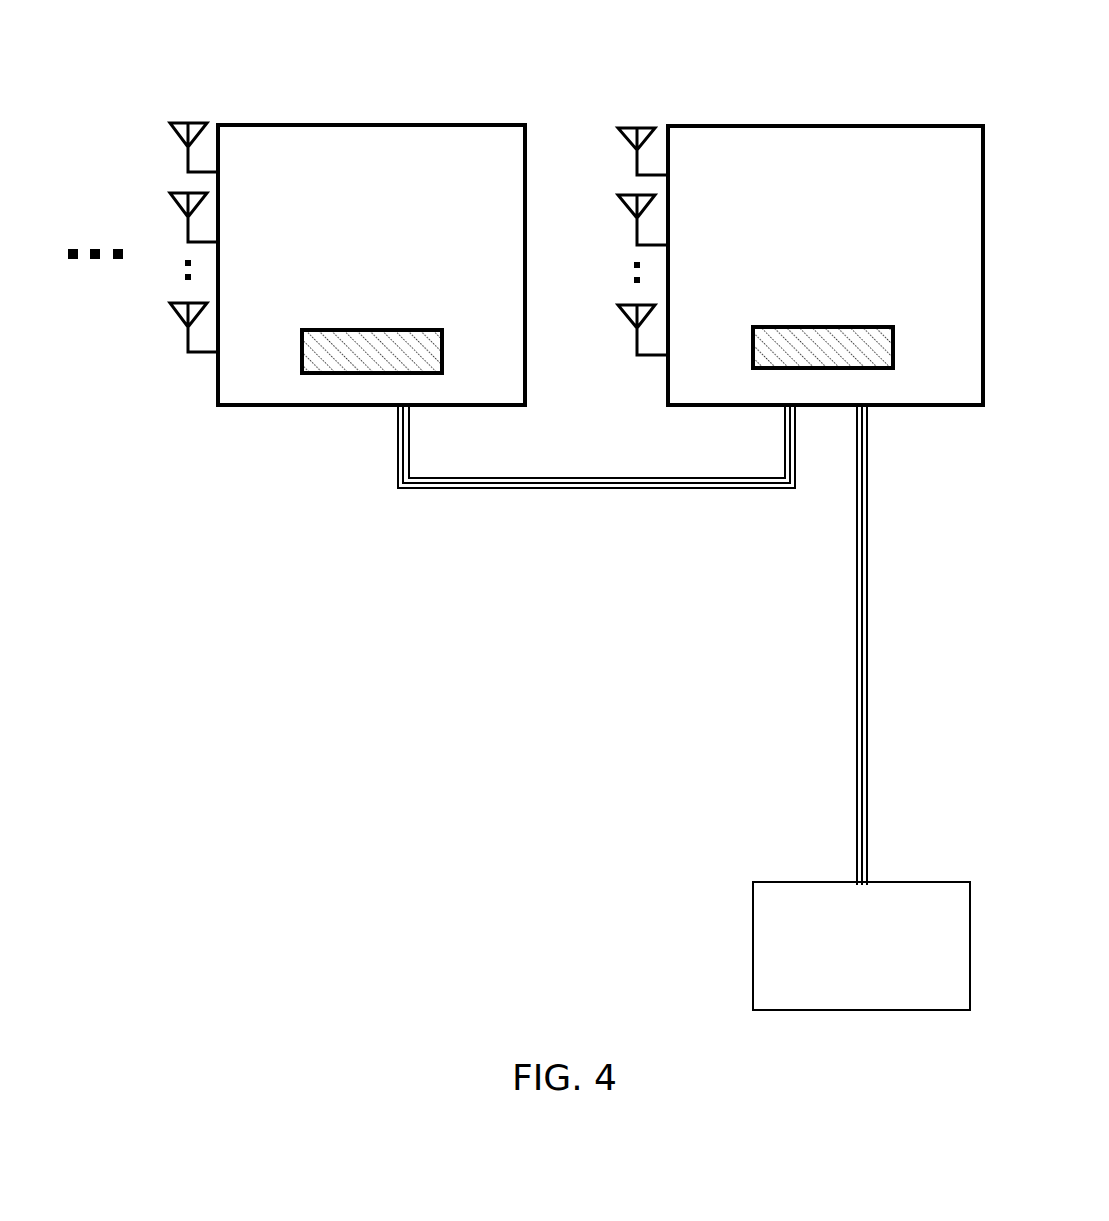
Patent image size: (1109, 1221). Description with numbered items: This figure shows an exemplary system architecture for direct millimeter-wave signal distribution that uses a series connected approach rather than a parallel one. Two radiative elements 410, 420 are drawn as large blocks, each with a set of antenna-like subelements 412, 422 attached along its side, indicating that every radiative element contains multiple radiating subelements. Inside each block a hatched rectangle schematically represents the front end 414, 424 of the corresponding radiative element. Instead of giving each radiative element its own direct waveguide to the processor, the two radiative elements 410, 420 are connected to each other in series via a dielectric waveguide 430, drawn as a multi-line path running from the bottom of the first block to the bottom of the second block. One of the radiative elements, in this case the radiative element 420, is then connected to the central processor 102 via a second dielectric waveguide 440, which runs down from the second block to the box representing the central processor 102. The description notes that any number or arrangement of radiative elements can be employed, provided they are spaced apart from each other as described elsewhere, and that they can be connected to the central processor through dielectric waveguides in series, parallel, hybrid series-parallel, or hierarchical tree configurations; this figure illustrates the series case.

The central processor 102 is at (889, 957).
The radiative element 410 is at (338, 110).
The subelements 412 is at (182, 368).
The front end 414 is at (365, 330).
The radiative element 420 is at (837, 110).
The subelements 422 is at (605, 118).
The front end 424 is at (822, 327).
The dielectric waveguide 430 is at (572, 488).
The dielectric waveguide 440 is at (857, 753).